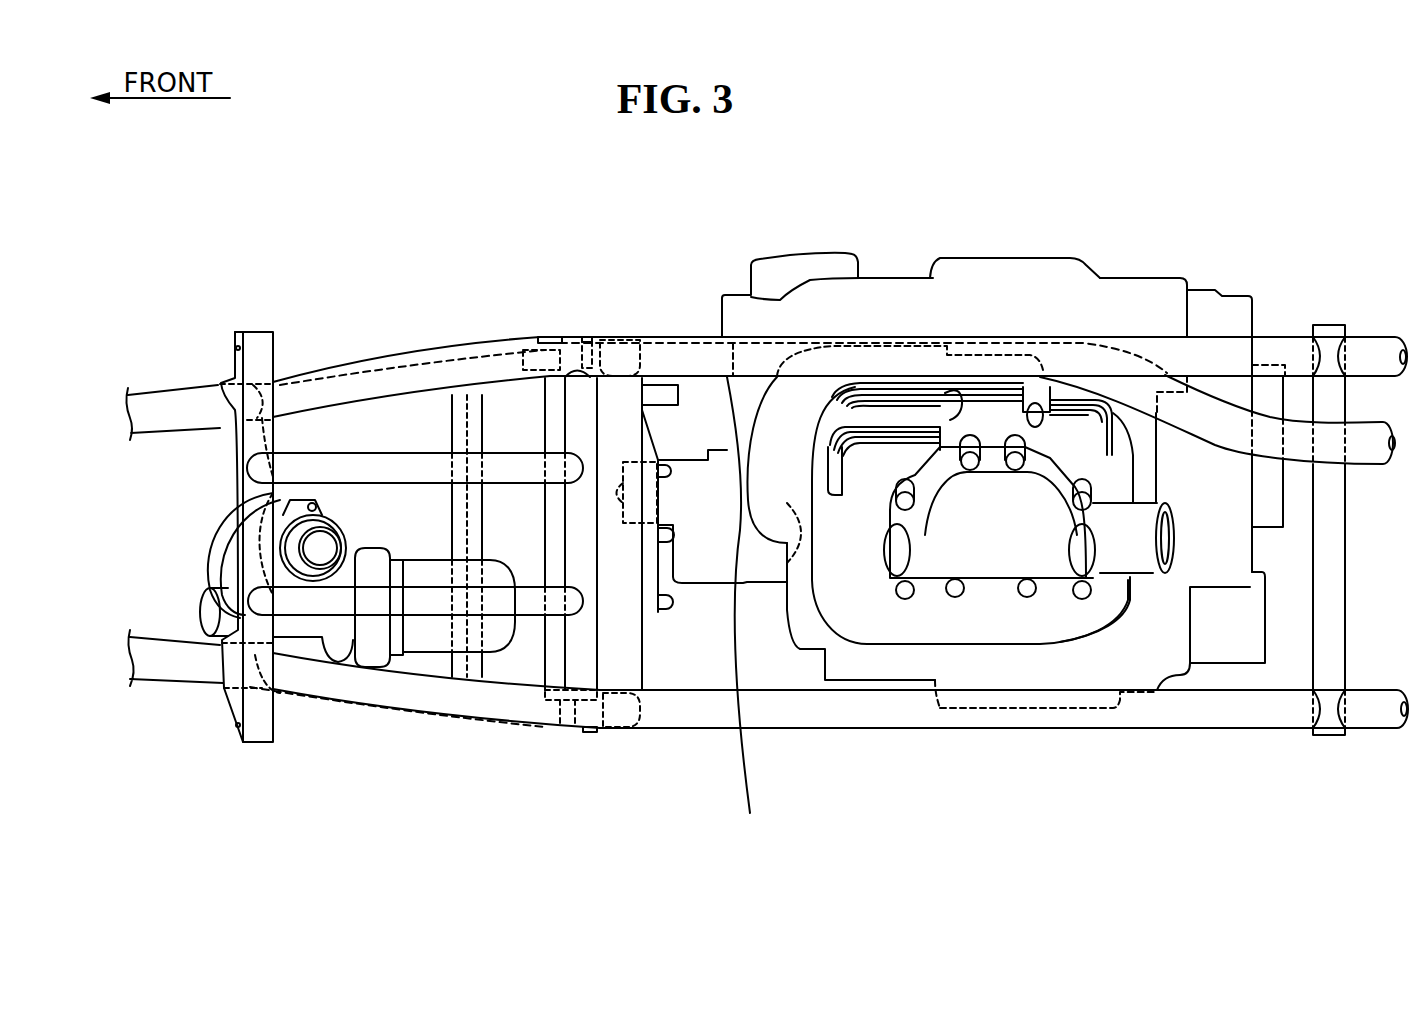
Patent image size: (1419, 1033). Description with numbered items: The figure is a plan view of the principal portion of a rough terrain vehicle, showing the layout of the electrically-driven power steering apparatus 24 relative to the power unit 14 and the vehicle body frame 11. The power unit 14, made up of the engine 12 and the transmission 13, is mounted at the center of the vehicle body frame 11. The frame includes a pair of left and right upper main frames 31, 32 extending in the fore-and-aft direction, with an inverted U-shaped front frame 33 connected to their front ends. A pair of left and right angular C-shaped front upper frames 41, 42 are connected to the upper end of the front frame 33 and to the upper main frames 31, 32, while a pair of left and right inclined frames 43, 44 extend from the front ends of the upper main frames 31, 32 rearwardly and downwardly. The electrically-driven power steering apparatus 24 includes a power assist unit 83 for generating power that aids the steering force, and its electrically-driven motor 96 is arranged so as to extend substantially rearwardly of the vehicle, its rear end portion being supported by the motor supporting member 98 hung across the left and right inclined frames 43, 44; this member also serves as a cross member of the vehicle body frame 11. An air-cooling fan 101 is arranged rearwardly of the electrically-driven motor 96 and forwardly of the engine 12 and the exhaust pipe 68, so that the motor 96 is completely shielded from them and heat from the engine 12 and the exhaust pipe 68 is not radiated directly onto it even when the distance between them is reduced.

The vehicle body frame 11 is at (338, 358).
The engine 12 is at (980, 578).
The transmission 13 is at (1033, 665).
The power unit 14 is at (967, 256).
The electrically-driven power steering apparatus 24 is at (200, 547).
The upper main frame 31 is at (1157, 708).
The upper main frame 32 is at (1162, 355).
The front frame 33 is at (168, 670).
The front upper frame 41 is at (531, 600).
The front upper frame 42 is at (513, 467).
The inclined frame 43 is at (498, 727).
The inclined frame 44 is at (507, 342).
The exhaust pipe 68 is at (767, 503).
The power assist unit 83 is at (333, 663).
The electrically-driven motor 96 is at (430, 640).
The motor supporting member 98 is at (473, 398).
The air-cooling fan 101 is at (622, 413).